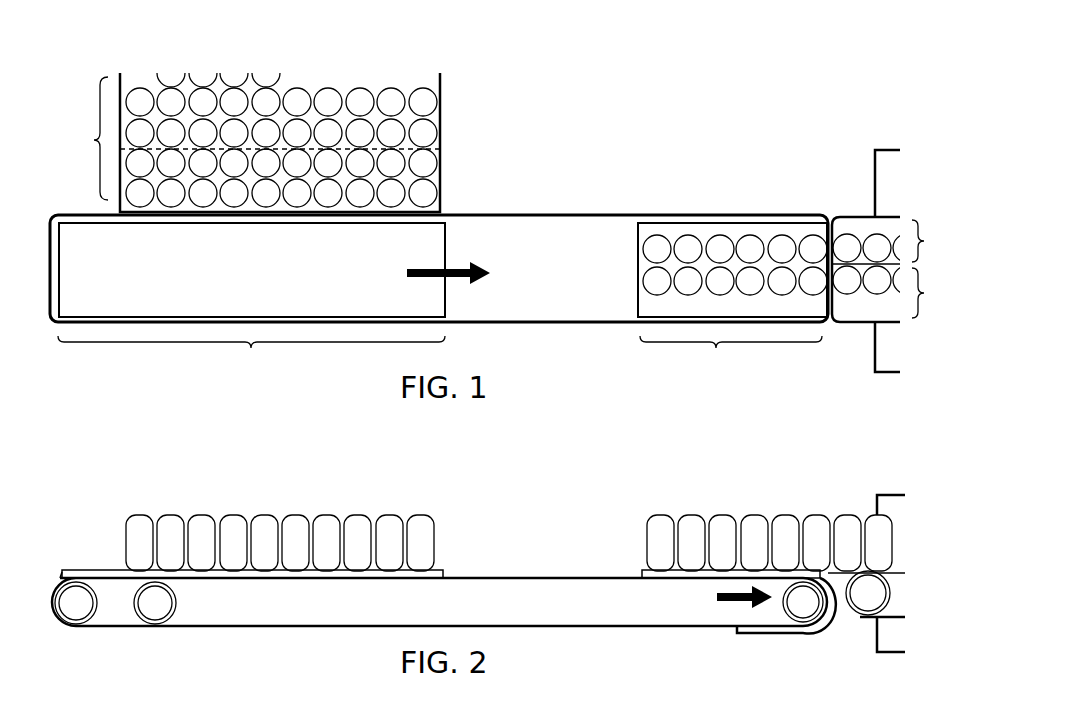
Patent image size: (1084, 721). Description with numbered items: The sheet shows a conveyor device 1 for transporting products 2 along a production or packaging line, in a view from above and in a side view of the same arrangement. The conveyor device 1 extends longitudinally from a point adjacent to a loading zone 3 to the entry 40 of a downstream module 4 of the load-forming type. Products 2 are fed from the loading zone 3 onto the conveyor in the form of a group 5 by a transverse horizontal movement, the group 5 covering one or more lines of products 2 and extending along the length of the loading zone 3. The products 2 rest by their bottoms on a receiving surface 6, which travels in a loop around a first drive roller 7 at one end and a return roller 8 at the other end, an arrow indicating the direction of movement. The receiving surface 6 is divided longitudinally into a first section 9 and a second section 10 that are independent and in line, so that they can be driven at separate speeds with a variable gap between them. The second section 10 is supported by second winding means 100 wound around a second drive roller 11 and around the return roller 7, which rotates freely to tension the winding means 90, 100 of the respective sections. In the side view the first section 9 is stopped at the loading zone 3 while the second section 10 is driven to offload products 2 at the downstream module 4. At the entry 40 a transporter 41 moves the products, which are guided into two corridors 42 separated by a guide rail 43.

In FIG. 1, the conveyor device 1 is at (531, 212).
In FIG. 2, the conveyor device 1 is at (528, 565).
In FIG. 1, the products 2 is at (357, 100).
In FIG. 2, the products 2 is at (137, 534).
In FIG. 1, the loading zone 3 is at (256, 142).
In FIG. 1, the downstream module 4 is at (869, 143).
In FIG. 2, the downstream module 4 is at (866, 650).
In FIG. 1, the group of products 5 is at (305, 140).
In FIG. 2, the receiving surface 6 is at (115, 560).
In FIG. 2, the first drive roller / return roller 7 is at (79, 608).
In FIG. 2, the return roller 8 is at (800, 613).
In FIG. 1, the first section 9 is at (251, 301).
In FIG. 2, the first section 9 is at (257, 577).
In FIG. 1, the second section 10 is at (732, 303).
In FIG. 2, the second section 10 is at (680, 577).
In FIG. 2, the second drive roller 11 is at (155, 608).
In FIG. 1, the entry of the downstream module 40 is at (868, 232).
In FIG. 2, the entry of the downstream module 40 is at (870, 545).
In FIG. 2, the transporter 41 is at (882, 607).
In FIG. 1, the corridors 42 is at (936, 269).
In FIG. 1, the guide rail 43 is at (885, 267).
In FIG. 2, the winding means of the first section 90 is at (110, 630).
In FIG. 2, the second winding means 100 is at (335, 630).